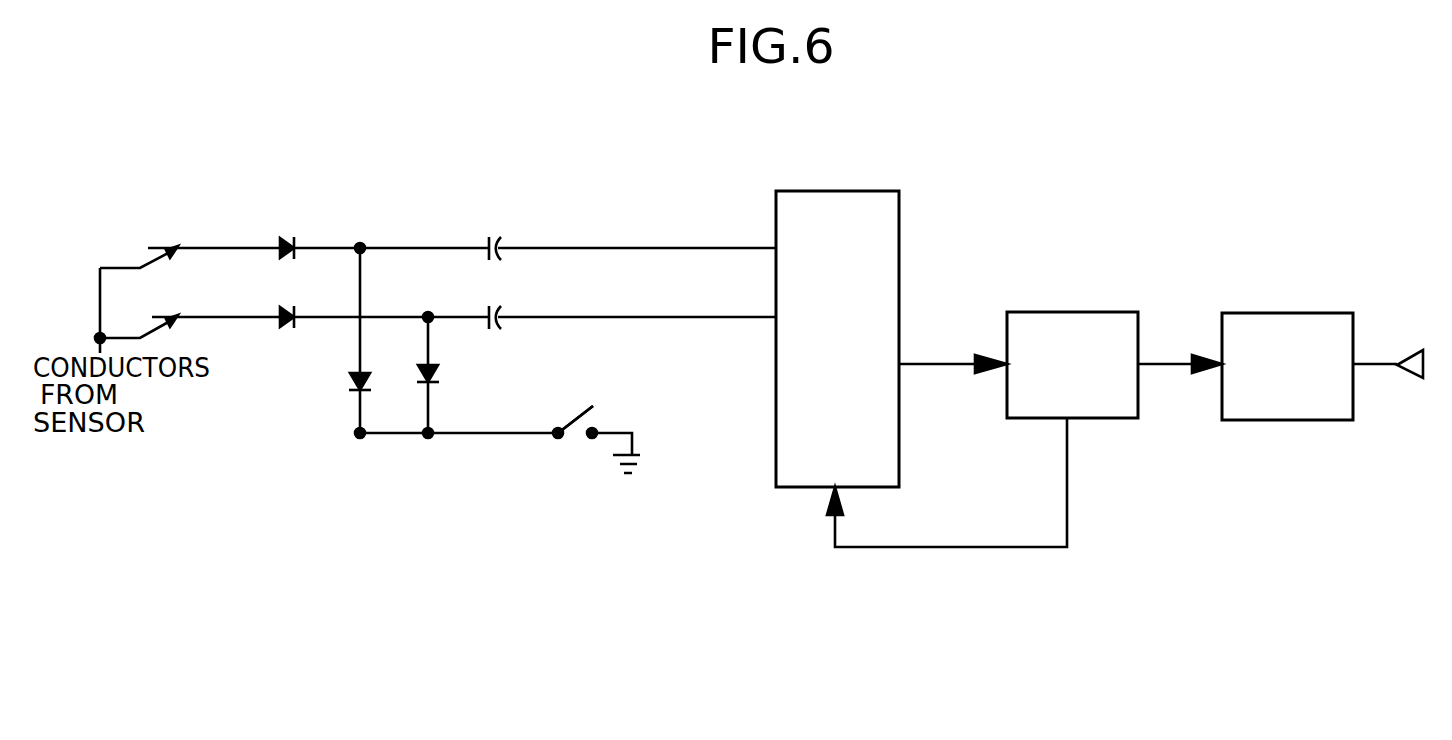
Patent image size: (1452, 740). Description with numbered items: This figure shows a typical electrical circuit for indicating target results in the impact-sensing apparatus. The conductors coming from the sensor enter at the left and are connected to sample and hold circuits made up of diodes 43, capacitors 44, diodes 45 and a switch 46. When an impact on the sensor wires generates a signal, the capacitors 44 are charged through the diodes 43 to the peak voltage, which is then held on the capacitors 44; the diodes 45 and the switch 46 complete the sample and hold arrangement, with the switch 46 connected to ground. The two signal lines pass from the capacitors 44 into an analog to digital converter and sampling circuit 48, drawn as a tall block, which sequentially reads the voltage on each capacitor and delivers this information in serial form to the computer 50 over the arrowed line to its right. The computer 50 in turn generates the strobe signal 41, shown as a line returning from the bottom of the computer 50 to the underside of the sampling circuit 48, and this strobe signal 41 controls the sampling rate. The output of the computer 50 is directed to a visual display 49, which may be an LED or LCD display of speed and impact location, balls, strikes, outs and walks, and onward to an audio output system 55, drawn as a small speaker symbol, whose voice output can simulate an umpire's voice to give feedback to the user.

The strobe signal 41 is at (912, 548).
The diodes 43 is at (290, 237).
The capacitors 44 is at (505, 243).
The diodes 45 is at (347, 391).
The switch 46 is at (580, 441).
The analog to digital converter and sampling circuit 48 is at (855, 257).
The visual display 49 is at (1282, 334).
The computer 50 is at (1072, 331).
The audio output system 55 is at (1410, 378).